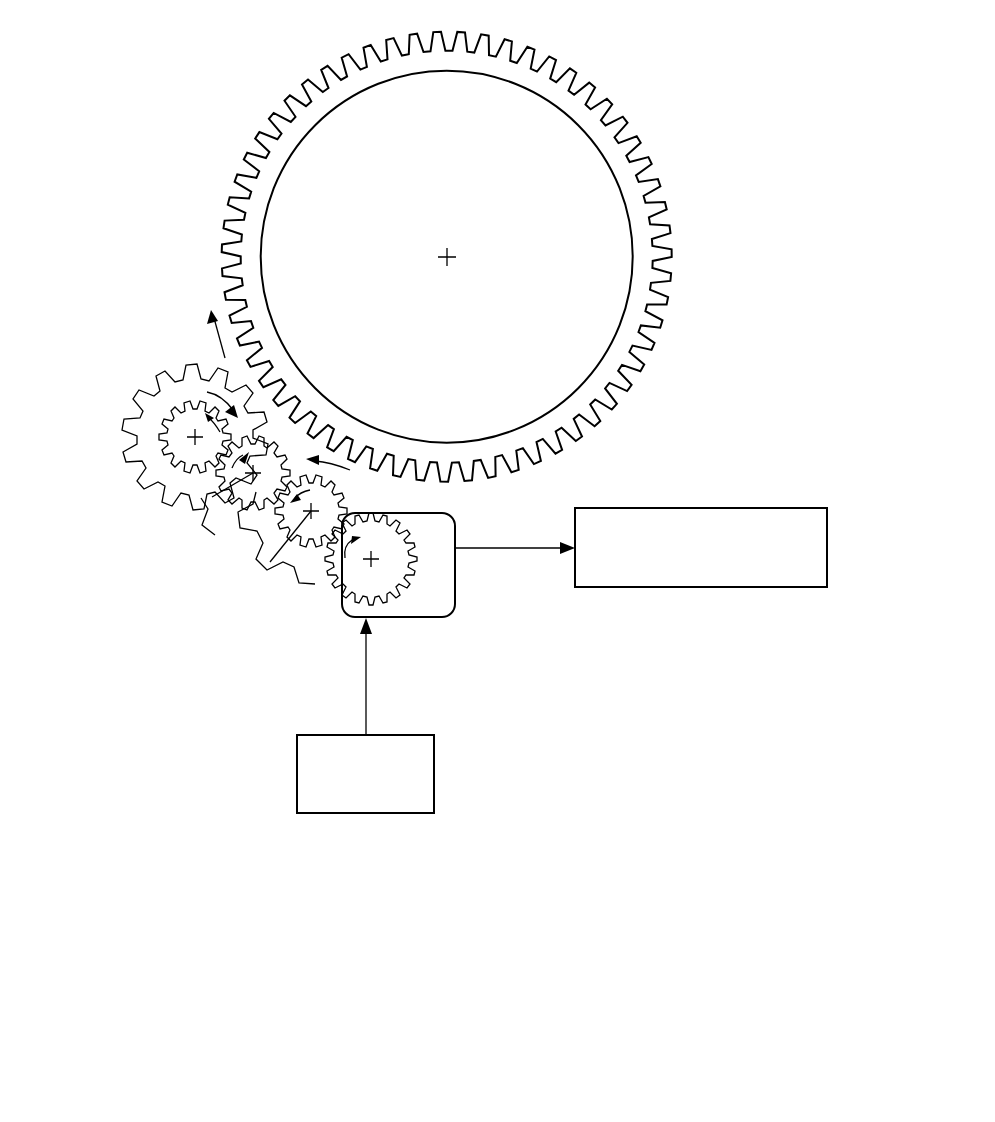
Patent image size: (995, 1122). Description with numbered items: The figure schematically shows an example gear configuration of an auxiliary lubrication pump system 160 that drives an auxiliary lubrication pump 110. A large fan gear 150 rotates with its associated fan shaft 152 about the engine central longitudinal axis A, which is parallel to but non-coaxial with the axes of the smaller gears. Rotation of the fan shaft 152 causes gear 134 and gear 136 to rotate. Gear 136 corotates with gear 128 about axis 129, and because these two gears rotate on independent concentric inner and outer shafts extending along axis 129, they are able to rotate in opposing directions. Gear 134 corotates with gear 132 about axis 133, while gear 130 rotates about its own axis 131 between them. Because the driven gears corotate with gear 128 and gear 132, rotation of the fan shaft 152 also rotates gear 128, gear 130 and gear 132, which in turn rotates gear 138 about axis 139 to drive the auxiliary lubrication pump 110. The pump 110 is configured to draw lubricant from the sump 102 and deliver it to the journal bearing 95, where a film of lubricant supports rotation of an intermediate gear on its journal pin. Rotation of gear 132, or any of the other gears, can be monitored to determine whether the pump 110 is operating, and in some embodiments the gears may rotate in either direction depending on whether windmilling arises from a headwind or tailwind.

The auxiliary lubrication pump system 160 is at (772, 58).
The fan gear 150 is at (582, 79).
The fan shaft 152 is at (625, 167).
The central longitudinal axis A is at (447, 257).
The gear 136 is at (124, 454).
The gear 128 is at (150, 400).
The axis 129 is at (195, 437).
The gear 130 is at (230, 512).
The axis 131 is at (227, 507).
The gear 132 is at (297, 587).
The axis 133 is at (266, 560).
The gear 134 is at (380, 492).
The gear 138 is at (345, 596).
The axis 139 is at (372, 560).
The auxiliary lubrication pump 110 is at (423, 618).
The journal bearing 95 is at (718, 576).
The sump 102 is at (389, 806).